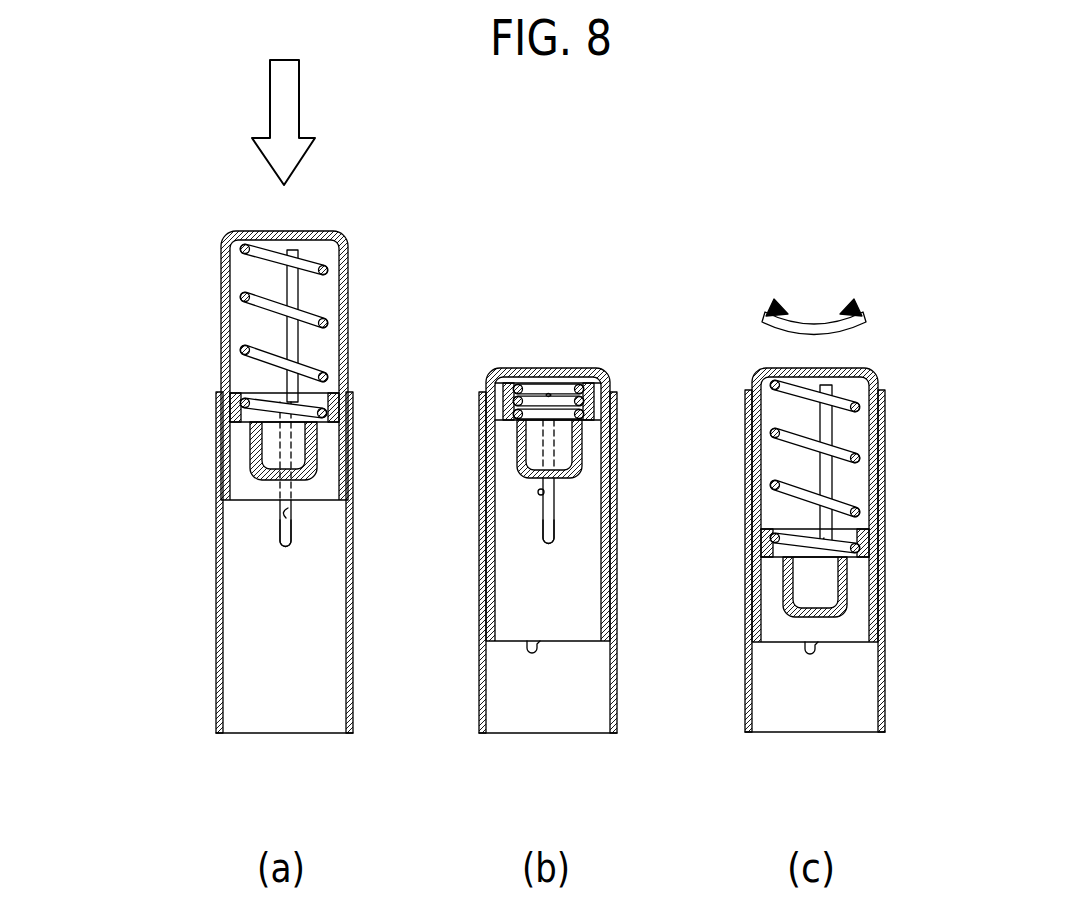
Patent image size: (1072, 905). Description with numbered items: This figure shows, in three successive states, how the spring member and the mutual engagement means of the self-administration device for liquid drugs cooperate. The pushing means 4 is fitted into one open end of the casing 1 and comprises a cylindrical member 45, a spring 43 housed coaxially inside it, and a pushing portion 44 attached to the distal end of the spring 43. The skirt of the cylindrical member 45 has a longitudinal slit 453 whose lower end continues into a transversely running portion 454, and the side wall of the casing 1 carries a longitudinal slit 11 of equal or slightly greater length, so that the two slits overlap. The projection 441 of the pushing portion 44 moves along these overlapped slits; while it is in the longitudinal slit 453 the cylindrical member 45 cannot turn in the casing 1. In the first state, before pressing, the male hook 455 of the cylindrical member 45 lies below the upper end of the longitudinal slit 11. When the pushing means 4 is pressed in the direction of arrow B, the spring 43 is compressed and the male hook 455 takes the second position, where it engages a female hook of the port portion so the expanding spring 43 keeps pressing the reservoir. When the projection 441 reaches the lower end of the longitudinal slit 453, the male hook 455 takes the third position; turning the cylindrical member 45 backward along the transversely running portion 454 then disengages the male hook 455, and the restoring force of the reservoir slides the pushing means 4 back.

The arrow B is at (299, 107).
The casing 1 is at (216, 634).
The pushing means 4 is at (294, 359).
The cylindrical member 45 is at (347, 267).
The spring 43 is at (323, 323).
The pushing portion 44 is at (317, 447).
The projection 441 is at (858, 530).
The longitudinal slit 11 is at (280, 533).
The longitudinal slit 453 is at (555, 497).
The transversely running portion 454 is at (540, 538).
The male hook 455 is at (291, 516).